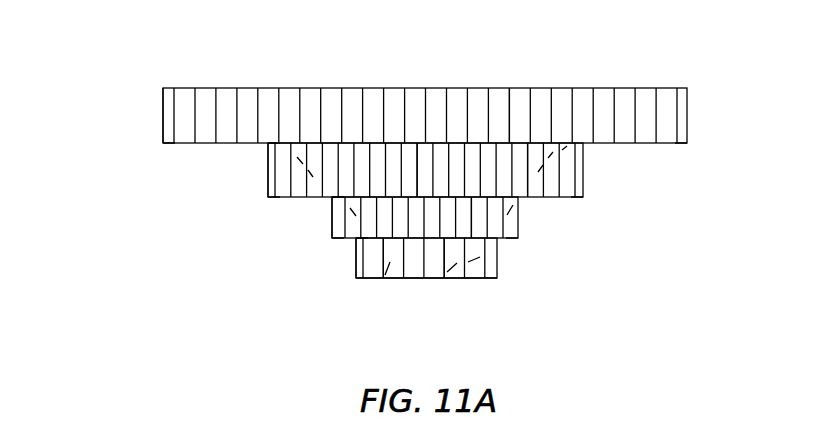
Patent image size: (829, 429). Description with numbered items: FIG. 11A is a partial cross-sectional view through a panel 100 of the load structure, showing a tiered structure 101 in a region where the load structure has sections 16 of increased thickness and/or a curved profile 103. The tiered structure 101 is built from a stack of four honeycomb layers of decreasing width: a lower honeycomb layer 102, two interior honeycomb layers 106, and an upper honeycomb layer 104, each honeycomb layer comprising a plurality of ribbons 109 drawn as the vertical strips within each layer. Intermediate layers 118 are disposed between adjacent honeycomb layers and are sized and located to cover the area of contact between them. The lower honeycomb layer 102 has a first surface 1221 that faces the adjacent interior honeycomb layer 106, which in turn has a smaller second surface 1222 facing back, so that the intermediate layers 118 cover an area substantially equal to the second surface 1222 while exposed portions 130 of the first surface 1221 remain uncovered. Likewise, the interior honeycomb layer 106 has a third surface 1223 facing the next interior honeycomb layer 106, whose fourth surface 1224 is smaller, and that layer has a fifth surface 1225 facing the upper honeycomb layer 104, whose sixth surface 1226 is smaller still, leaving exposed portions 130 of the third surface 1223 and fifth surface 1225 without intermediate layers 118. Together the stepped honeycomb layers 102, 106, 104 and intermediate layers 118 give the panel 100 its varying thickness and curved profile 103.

The panel 100 is at (222, 45).
The tiered structure 101 is at (415, 194).
The lower honeycomb layer 102 is at (670, 118).
The curved profile 103 is at (392, 262).
The upper honeycomb layer 104 is at (497, 272).
The interior honeycomb layer 106 is at (518, 222).
The ribbons 109 is at (161, 115).
The intermediate layers 118 is at (266, 145).
The exposed portions 130 is at (165, 144).
The sections 16 is at (410, 283).
The first surface 1221 is at (576, 119).
The second surface 1222 is at (533, 86).
The third surface 1223 is at (538, 255).
The fourth surface 1224 is at (386, 118).
The fifth surface 1225 is at (334, 159).
The sixth surface 1226 is at (445, 277).